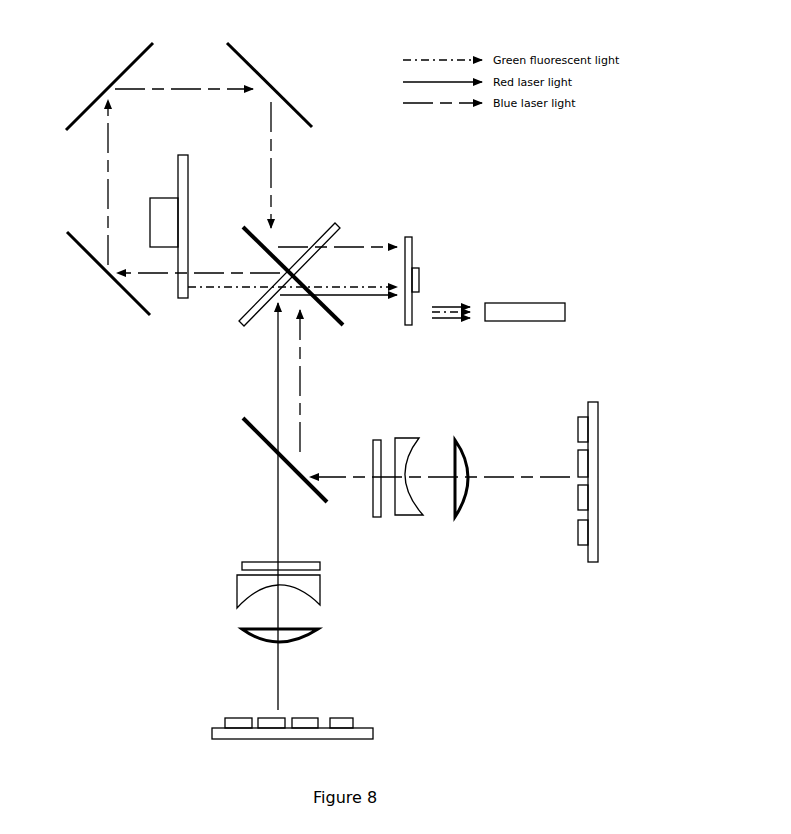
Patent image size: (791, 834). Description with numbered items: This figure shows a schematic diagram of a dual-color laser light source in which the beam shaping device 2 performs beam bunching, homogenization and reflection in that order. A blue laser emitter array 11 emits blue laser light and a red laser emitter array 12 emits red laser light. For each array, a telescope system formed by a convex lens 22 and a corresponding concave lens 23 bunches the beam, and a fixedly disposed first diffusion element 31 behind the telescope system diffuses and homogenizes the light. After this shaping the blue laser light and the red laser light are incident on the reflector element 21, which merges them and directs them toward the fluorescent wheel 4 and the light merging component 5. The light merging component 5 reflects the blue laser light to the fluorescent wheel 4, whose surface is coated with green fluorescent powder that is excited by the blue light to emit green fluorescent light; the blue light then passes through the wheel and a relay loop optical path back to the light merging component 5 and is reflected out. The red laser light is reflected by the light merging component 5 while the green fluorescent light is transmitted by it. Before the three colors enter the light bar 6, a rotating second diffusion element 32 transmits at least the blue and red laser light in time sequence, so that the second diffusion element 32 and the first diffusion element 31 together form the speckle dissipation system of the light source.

The beam shaping device 2 is at (232, 474).
The fluorescent wheel 4 is at (183, 300).
The light merging component 5 is at (302, 233).
The light bar 6 is at (508, 303).
The blue laser emitter array 11 is at (578, 530).
The red laser emitter array 12 is at (342, 717).
The reflector element 21 is at (260, 442).
The convex lens 22 is at (455, 442).
The concave lens 23 is at (402, 435).
The first diffusion element 31 is at (378, 438).
The second diffusion element 32 is at (405, 230).